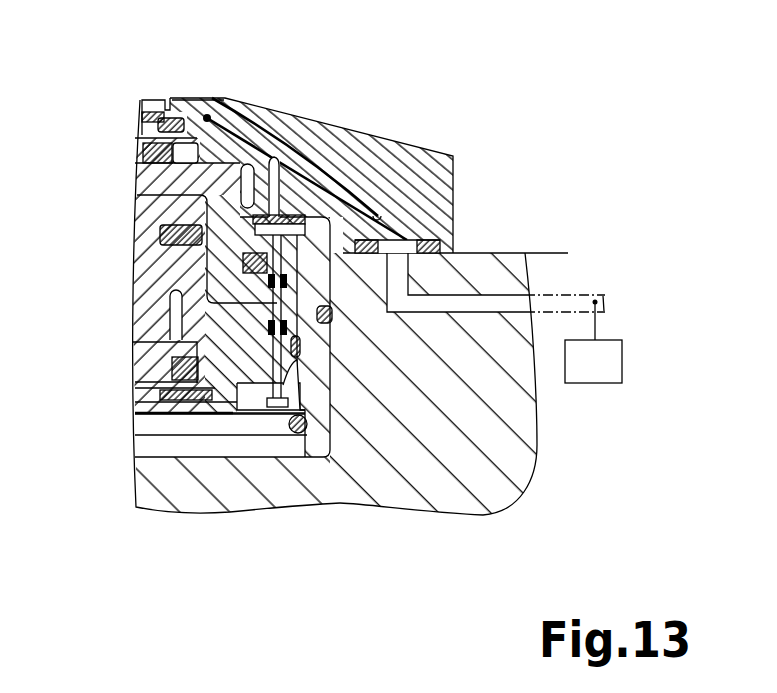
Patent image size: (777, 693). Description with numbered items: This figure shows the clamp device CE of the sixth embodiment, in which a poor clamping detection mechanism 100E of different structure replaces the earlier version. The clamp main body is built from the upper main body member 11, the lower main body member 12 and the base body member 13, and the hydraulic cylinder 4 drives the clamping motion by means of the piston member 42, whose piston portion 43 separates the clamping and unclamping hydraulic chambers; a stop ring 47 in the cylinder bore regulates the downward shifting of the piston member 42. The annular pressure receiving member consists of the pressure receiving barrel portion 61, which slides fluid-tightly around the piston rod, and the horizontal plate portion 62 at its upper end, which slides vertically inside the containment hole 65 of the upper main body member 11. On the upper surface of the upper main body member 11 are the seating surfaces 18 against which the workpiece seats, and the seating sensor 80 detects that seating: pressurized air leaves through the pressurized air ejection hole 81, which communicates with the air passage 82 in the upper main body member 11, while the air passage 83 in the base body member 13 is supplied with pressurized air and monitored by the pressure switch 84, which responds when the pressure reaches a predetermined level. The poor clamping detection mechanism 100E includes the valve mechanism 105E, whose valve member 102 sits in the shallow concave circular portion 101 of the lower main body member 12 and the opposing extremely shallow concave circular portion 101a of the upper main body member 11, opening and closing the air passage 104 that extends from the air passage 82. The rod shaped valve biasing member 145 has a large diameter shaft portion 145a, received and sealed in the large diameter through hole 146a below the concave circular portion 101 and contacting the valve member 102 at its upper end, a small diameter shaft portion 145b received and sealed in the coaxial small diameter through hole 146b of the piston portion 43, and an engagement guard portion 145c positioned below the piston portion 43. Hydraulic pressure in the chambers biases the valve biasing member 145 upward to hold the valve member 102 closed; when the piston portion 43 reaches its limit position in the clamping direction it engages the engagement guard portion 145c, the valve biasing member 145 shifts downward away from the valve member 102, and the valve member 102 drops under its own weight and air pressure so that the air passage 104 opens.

The clamp device CE is at (525, 80).
The hydraulic cylinder 4 is at (181, 446).
The upper main body member 11 is at (420, 148).
The lower main body member 12 is at (315, 404).
The base body member 13 is at (487, 442).
The seating surfaces 18 is at (213, 100).
The piston member 42 is at (227, 420).
The piston portion 43 is at (322, 443).
The stop ring 47 is at (298, 434).
The pressure receiving barrel portion 61 is at (215, 268).
The horizontal plate portion 62 is at (137, 173).
The containment hole 65 is at (244, 163).
The seating sensor 80 is at (174, 76).
The pressurized air ejection hole 81 is at (207, 116).
The air passage 82 is at (377, 218).
The air passage 83 is at (473, 295).
The pressure switch 84 is at (593, 385).
The poor clamping detection mechanism 100E is at (312, 135).
The concave circular portion 101 is at (340, 360).
The concave circular portion 101a is at (303, 193).
The valve member 102 is at (340, 187).
The air passage 104 is at (273, 157).
The valve mechanism 105E is at (238, 222).
The valve biasing member 145 is at (160, 233).
The large diameter shaft portion 145a is at (215, 333).
The small diameter shaft portion 145b is at (200, 422).
The engagement guard portion 145c is at (277, 413).
The large diameter through hole 146a is at (210, 298).
The small diameter through hole 146b is at (200, 383).